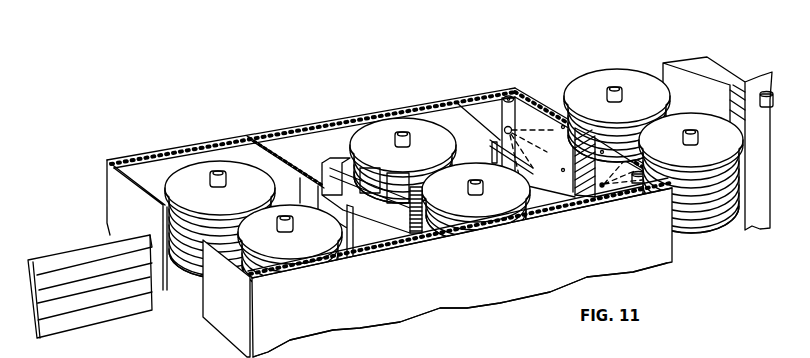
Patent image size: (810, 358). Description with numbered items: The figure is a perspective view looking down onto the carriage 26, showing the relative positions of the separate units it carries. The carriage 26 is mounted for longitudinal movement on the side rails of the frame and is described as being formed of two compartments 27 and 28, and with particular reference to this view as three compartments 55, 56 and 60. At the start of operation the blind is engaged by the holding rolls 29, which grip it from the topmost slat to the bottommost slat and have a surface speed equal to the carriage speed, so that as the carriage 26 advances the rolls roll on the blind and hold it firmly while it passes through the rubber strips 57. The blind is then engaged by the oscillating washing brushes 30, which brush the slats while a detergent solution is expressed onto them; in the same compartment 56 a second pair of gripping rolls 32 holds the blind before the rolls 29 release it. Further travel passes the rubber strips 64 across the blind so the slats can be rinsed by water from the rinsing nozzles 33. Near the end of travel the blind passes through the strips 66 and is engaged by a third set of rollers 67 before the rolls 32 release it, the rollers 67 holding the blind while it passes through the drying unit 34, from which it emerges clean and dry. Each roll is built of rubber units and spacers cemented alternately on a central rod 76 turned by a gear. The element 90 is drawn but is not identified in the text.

The carriage 26 is at (512, 285).
The compartment 27 is at (148, 178).
The compartment 28 is at (462, 272).
The holding rolls 29 is at (220, 219).
The washing brushes 30 is at (433, 242).
The gripping rolls 32 is at (403, 160).
The rinsing nozzles 33 is at (512, 127).
The drying unit 34 is at (720, 73).
The compartment 55 is at (282, 180).
The compartment 56 is at (463, 148).
The rubber strips 57 is at (315, 197).
The compartment 60 is at (535, 120).
The rubber strips 64 is at (504, 95).
The strips 66 is at (578, 132).
The rollers 67 is at (622, 88).
The central rod 76 is at (217, 168).
The hub cap 90 is at (645, 185).